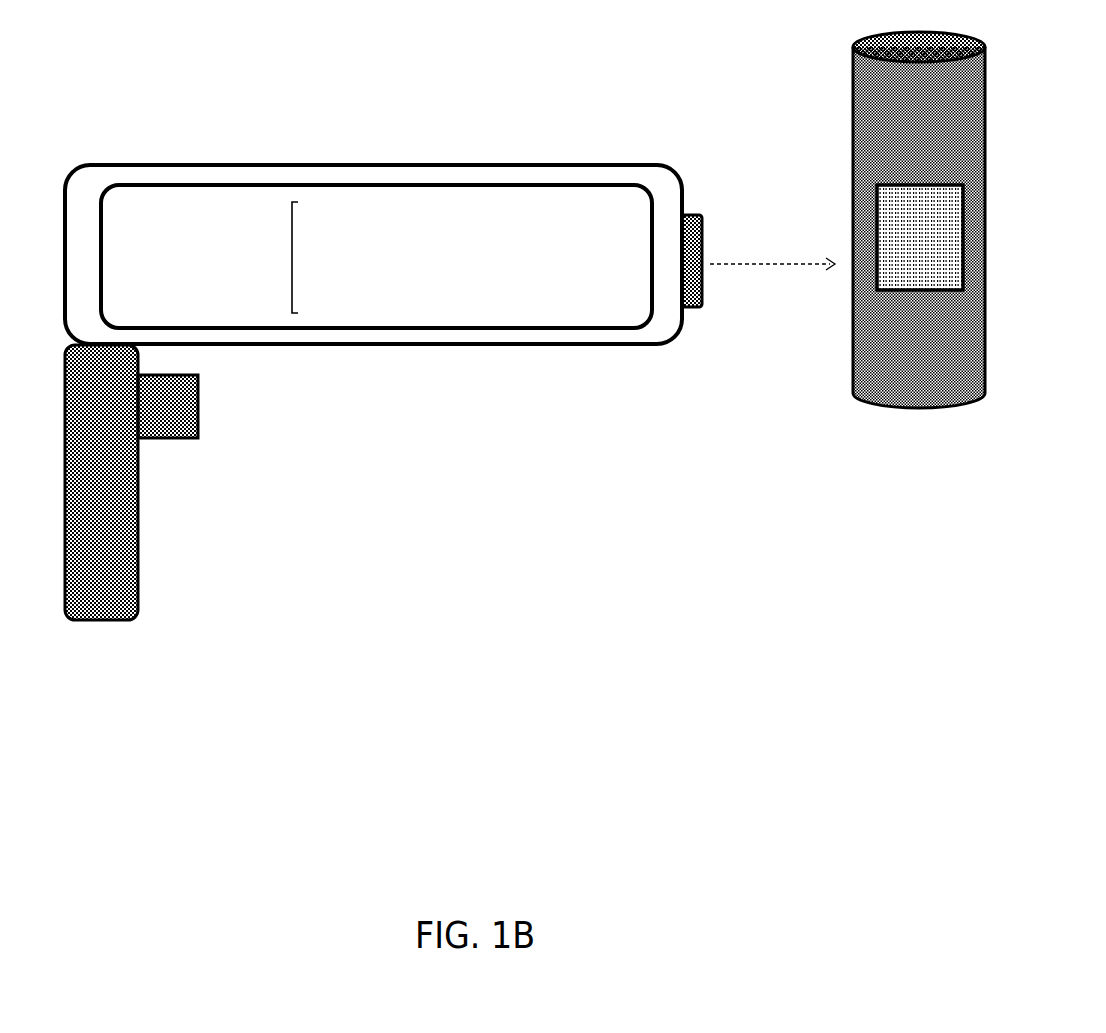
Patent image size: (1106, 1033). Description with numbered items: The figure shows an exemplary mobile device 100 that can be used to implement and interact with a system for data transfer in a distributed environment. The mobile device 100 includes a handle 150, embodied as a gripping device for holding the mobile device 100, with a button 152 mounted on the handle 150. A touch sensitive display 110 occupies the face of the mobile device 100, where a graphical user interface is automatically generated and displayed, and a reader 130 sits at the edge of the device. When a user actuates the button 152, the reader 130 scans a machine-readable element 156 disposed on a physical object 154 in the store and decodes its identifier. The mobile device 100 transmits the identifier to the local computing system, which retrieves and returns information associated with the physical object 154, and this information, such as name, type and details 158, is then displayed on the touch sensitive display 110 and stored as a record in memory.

The mobile device 100 is at (102, 148).
The touch sensitive display 110 is at (587, 328).
The reader 130 is at (690, 307).
The handle 150 is at (138, 592).
The button 152 is at (198, 408).
The physical object 154 is at (930, 387).
The machine-readable element 156 is at (963, 238).
The displayed information 158 is at (291, 257).